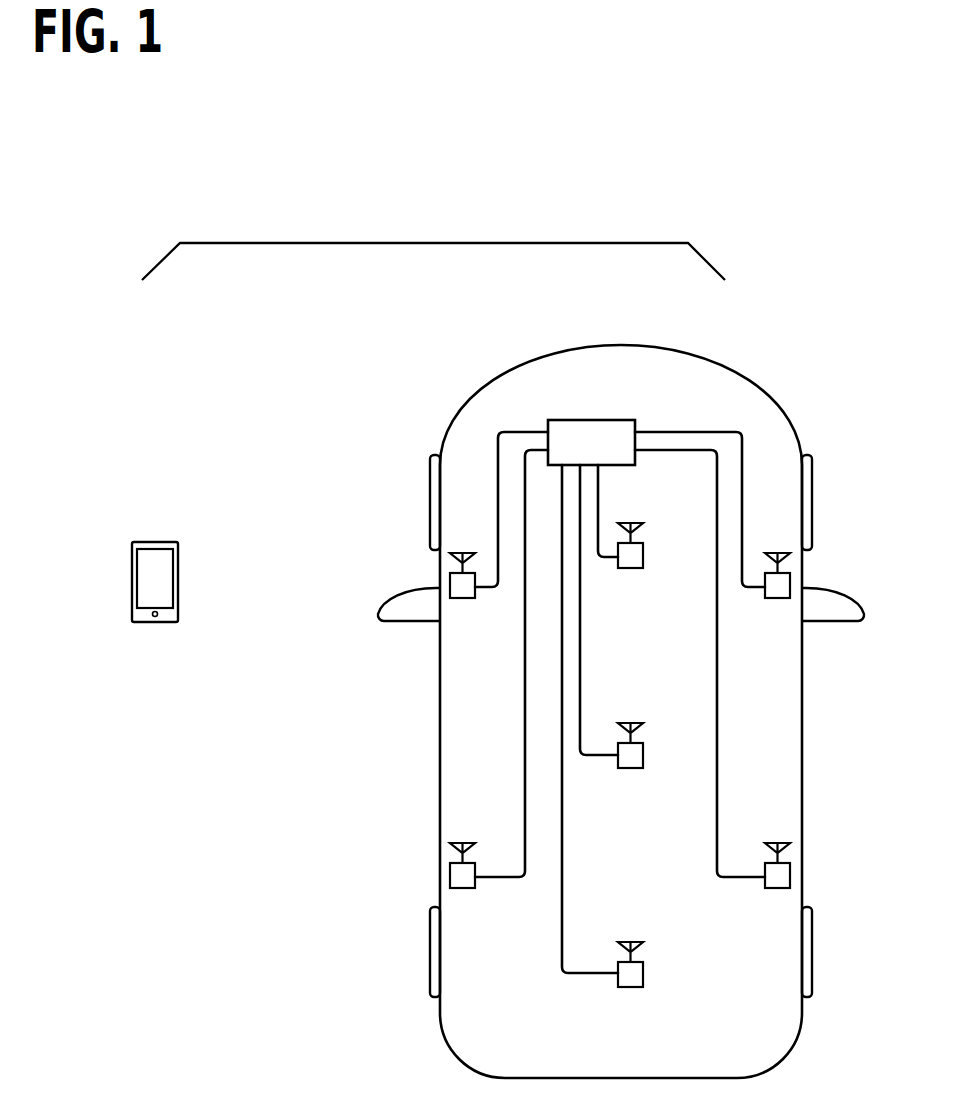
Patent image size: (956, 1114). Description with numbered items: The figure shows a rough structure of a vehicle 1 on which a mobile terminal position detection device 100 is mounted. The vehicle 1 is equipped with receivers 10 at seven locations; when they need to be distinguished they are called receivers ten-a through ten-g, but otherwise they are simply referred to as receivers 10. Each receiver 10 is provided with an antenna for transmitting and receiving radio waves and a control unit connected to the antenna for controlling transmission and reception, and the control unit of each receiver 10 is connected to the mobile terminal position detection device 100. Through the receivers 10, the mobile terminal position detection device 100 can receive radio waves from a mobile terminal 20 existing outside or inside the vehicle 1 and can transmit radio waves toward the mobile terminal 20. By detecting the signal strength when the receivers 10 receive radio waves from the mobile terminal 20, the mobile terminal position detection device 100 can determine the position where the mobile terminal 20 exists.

The vehicle 1 is at (787, 417).
The receiver 10 is at (624, 792).
The mobile terminal position detection device 100 is at (608, 420).
The mobile terminal 20 is at (162, 542).